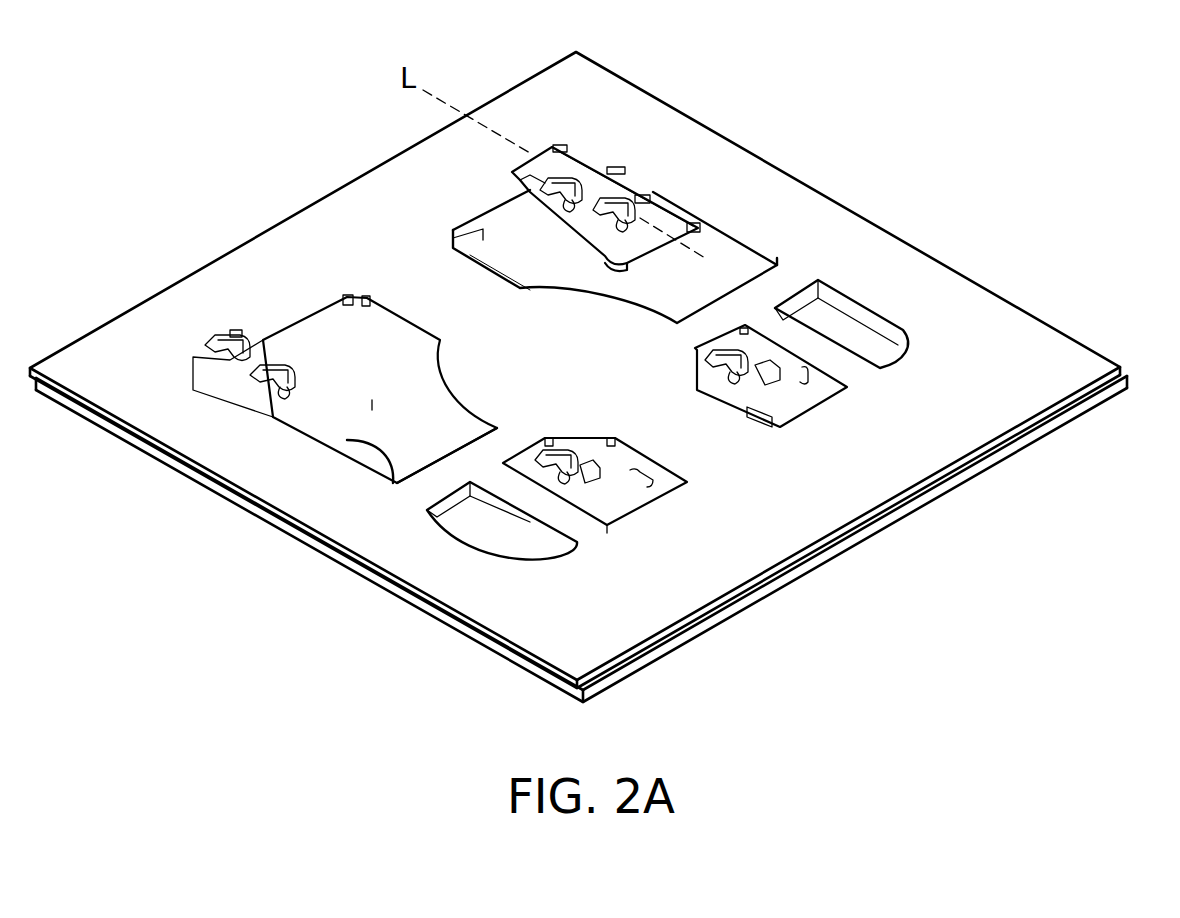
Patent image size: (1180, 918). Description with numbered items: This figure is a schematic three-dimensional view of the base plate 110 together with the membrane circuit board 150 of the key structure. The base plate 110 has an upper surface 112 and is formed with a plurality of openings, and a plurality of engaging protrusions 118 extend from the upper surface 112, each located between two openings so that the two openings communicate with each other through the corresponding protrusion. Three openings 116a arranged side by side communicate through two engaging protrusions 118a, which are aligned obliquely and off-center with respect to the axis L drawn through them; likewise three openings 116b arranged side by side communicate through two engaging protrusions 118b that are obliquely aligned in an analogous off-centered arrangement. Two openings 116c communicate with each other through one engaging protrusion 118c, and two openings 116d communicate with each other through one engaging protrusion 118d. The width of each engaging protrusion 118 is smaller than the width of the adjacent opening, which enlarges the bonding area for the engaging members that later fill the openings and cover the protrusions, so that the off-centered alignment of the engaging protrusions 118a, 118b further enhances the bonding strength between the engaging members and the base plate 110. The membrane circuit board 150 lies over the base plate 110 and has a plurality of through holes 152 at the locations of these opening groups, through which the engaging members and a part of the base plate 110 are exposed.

The base plate 110 is at (1098, 400).
The upper surface 112 is at (660, 209).
The openings 116a is at (600, 180).
The openings 116b is at (317, 366).
The openings 116c is at (713, 368).
The openings 116d is at (568, 458).
The engaging protrusions 118 is at (778, 104).
The engaging protrusions 118a is at (627, 201).
The engaging protrusions 118b is at (286, 409).
The engaging protrusion 118c is at (847, 334).
The engaging protrusion 118d is at (528, 528).
The membrane circuit board 150 is at (950, 295).
The through holes 152 is at (489, 251).